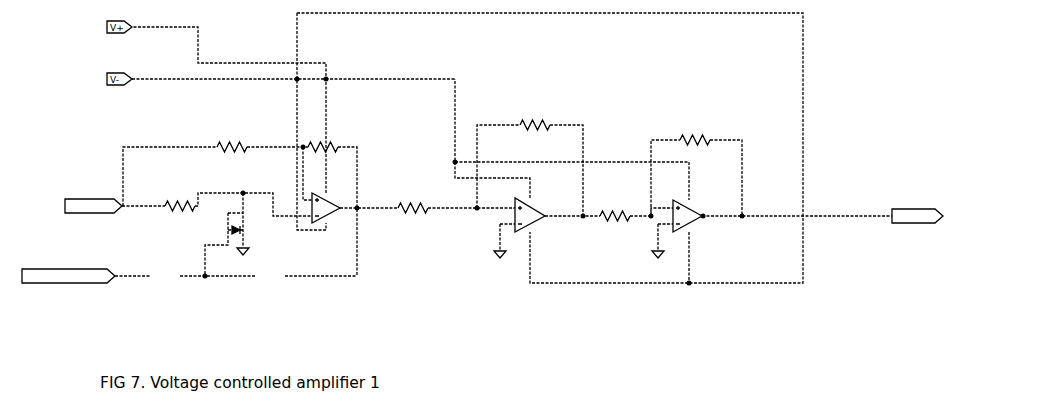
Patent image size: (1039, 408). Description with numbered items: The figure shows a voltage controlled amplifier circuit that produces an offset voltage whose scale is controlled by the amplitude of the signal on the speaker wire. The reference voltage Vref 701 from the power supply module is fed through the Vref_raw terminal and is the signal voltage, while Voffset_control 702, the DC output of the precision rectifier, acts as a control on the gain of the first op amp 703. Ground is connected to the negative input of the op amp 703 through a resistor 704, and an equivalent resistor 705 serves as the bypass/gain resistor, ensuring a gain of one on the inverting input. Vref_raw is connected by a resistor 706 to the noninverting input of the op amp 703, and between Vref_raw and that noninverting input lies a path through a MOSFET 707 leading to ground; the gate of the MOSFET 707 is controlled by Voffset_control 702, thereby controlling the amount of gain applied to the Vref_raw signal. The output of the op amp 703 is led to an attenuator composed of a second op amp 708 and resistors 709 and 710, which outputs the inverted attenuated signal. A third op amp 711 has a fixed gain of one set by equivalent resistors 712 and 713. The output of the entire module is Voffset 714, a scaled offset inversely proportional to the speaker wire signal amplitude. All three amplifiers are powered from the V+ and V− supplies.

The Vref 701 is at (123, 198).
The Voffset_control 702 is at (73, 268).
The op amp 703 is at (330, 207).
The resistor 704 is at (236, 142).
The resistor 705 is at (328, 143).
The resistor 706 is at (183, 200).
The MOSFET 707 is at (243, 227).
The op amp 708 is at (537, 206).
The resistor 709 is at (416, 200).
The resistor 710 is at (535, 121).
The op amp 711 is at (694, 207).
The resistor 712 is at (617, 207).
The resistor 713 is at (690, 136).
The Voffset 714 is at (919, 205).